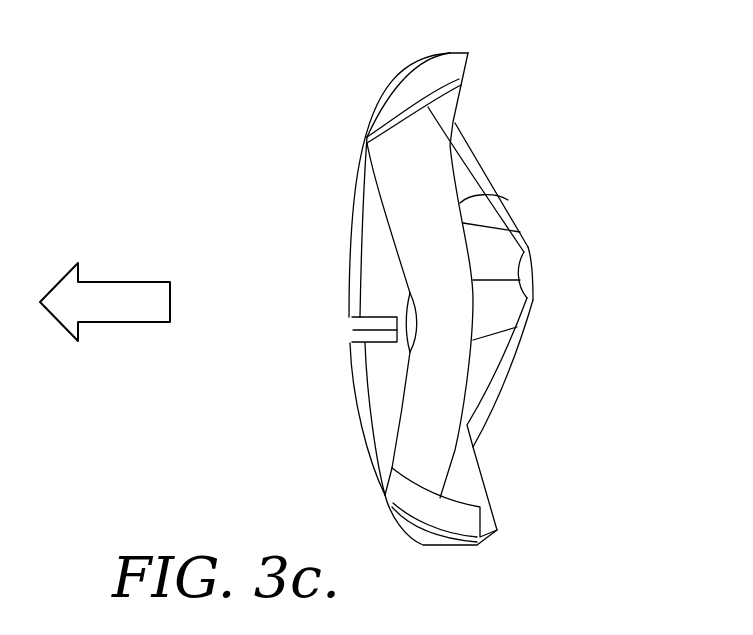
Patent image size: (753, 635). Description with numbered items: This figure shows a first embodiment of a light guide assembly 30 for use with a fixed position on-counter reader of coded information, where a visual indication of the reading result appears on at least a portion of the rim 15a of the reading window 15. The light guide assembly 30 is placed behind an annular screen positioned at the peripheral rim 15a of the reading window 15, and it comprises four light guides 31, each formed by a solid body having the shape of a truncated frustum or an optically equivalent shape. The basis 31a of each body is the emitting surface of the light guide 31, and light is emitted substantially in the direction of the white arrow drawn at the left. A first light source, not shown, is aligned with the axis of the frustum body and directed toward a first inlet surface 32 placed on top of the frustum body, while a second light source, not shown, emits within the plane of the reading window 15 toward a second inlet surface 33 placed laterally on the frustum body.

The light guide assembly 30 is at (526, 130).
The reading window 15 is at (326, 202).
The rim 15a is at (480, 387).
The light guide 31 is at (410, 65).
The basis 31a is at (365, 117).
The first inlet surface 32 is at (467, 53).
The second inlet surface 33 is at (353, 330).